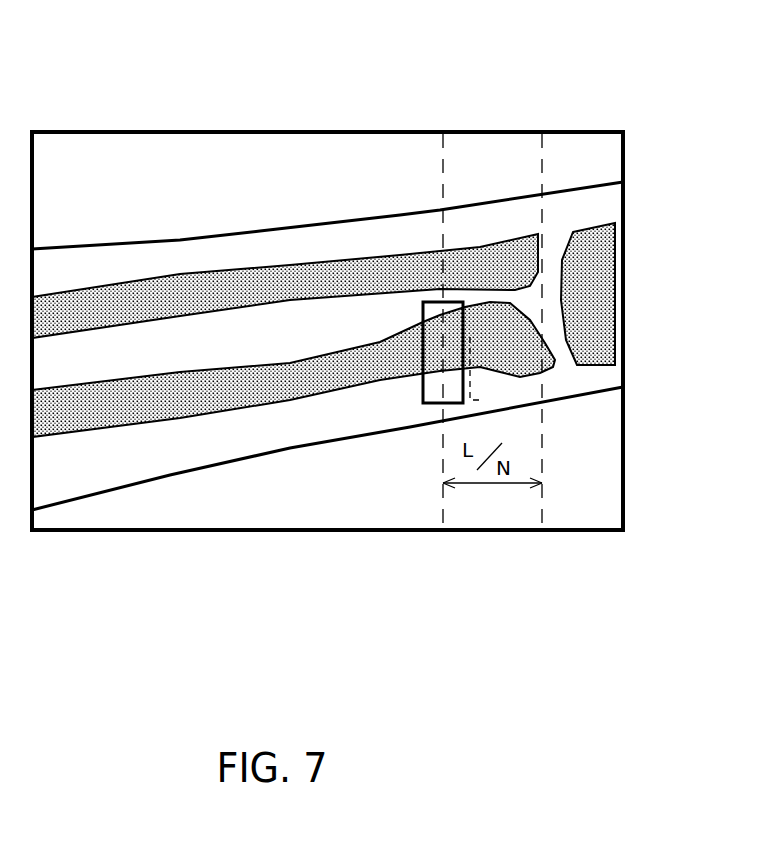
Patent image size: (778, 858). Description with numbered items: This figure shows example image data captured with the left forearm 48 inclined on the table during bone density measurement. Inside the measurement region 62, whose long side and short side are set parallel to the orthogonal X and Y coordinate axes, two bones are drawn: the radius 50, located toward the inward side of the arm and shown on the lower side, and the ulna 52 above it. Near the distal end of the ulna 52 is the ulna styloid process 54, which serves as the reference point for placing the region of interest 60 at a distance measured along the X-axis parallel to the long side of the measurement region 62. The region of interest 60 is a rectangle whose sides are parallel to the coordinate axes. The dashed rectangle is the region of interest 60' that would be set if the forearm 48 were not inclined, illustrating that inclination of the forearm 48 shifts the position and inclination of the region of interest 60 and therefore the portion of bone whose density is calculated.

The left forearm 48 is at (192, 232).
The radius 50 is at (190, 400).
The ulna 52 is at (270, 280).
The ulna styloid process 54 is at (538, 232).
The region of interest 60 is at (397, 455).
The region of interest set with forearm not inclined 60' is at (586, 389).
The measurement region 62 is at (127, 130).